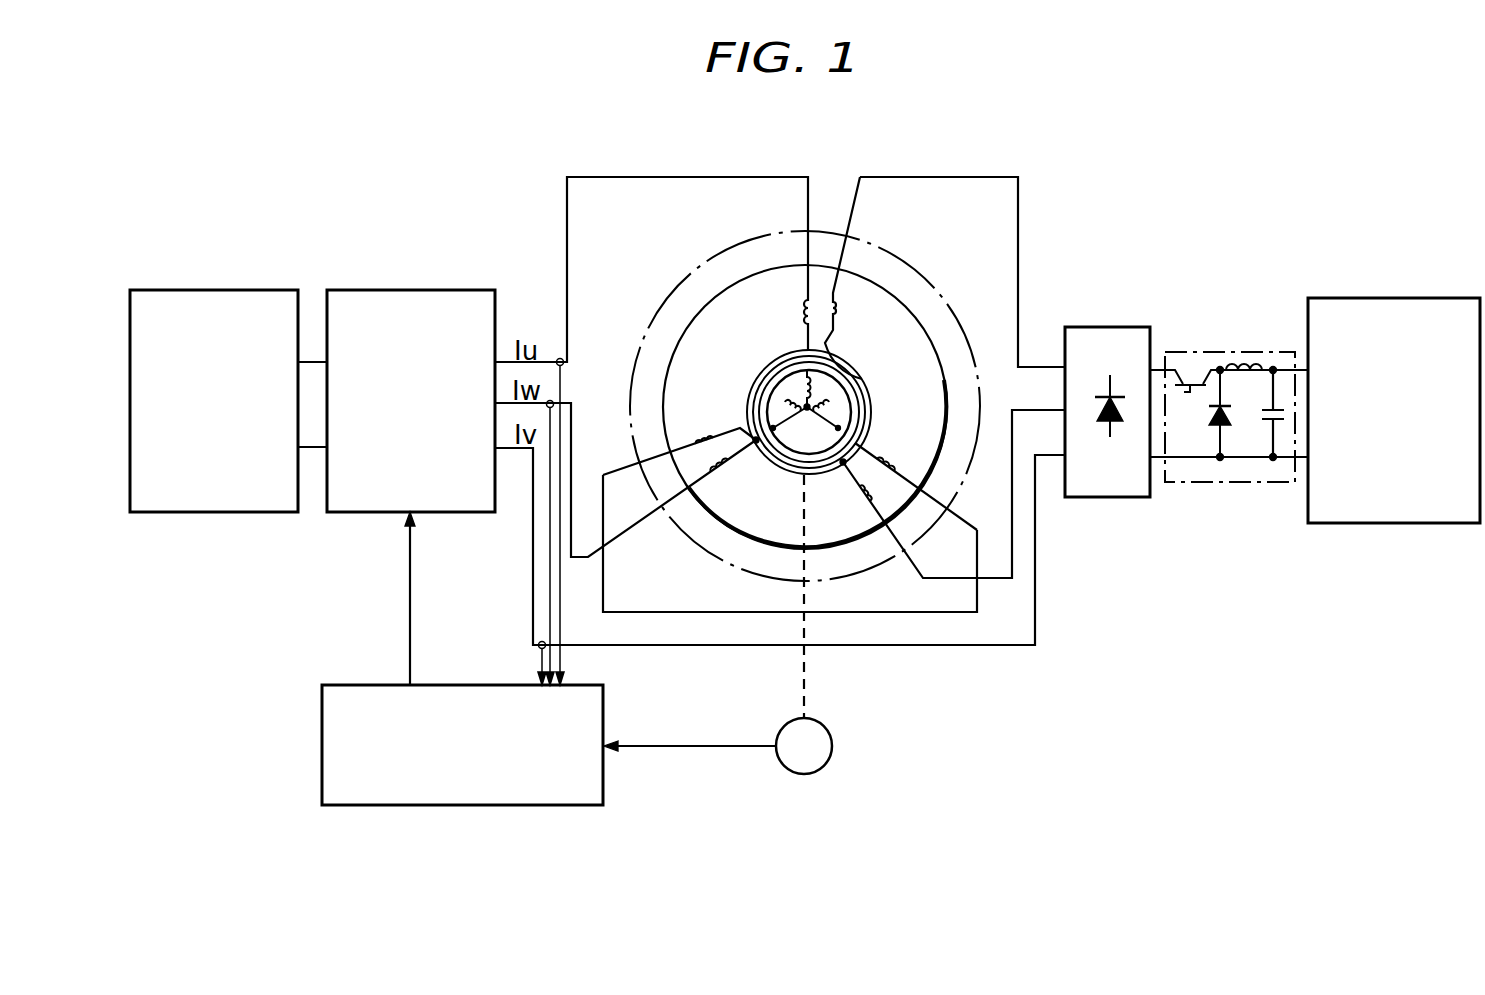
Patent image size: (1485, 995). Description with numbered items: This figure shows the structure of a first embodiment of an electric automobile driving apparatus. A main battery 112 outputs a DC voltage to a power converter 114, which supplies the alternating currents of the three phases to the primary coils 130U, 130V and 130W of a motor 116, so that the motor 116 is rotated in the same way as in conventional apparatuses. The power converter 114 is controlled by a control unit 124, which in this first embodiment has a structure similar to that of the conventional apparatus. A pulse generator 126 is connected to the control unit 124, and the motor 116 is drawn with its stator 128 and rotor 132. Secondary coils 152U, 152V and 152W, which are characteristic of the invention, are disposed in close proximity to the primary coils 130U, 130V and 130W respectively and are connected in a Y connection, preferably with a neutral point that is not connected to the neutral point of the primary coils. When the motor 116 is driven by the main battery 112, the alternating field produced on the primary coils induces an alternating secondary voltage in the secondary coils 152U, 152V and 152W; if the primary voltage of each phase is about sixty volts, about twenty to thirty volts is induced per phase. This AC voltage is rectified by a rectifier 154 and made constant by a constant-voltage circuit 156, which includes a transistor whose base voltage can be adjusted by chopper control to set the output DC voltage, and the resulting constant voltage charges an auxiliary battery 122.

The main battery 112 is at (210, 290).
The power converter 114 is at (405, 290).
The motor 116 is at (909, 260).
The auxiliary battery 122 is at (1385, 298).
The control unit 124 is at (320, 744).
The pulse generator 126 is at (833, 752).
The stator 128 is at (918, 310).
The primary coil 130U is at (798, 312).
The primary coil 130V is at (885, 459).
The primary coil 130W is at (728, 466).
The rotor 132 is at (861, 383).
The secondary coil 152U is at (834, 310).
The secondary coil 152V is at (858, 494).
The secondary coil 152W is at (703, 437).
The rectifier 154 is at (1110, 327).
The constant-voltage circuit 156 is at (1230, 352).